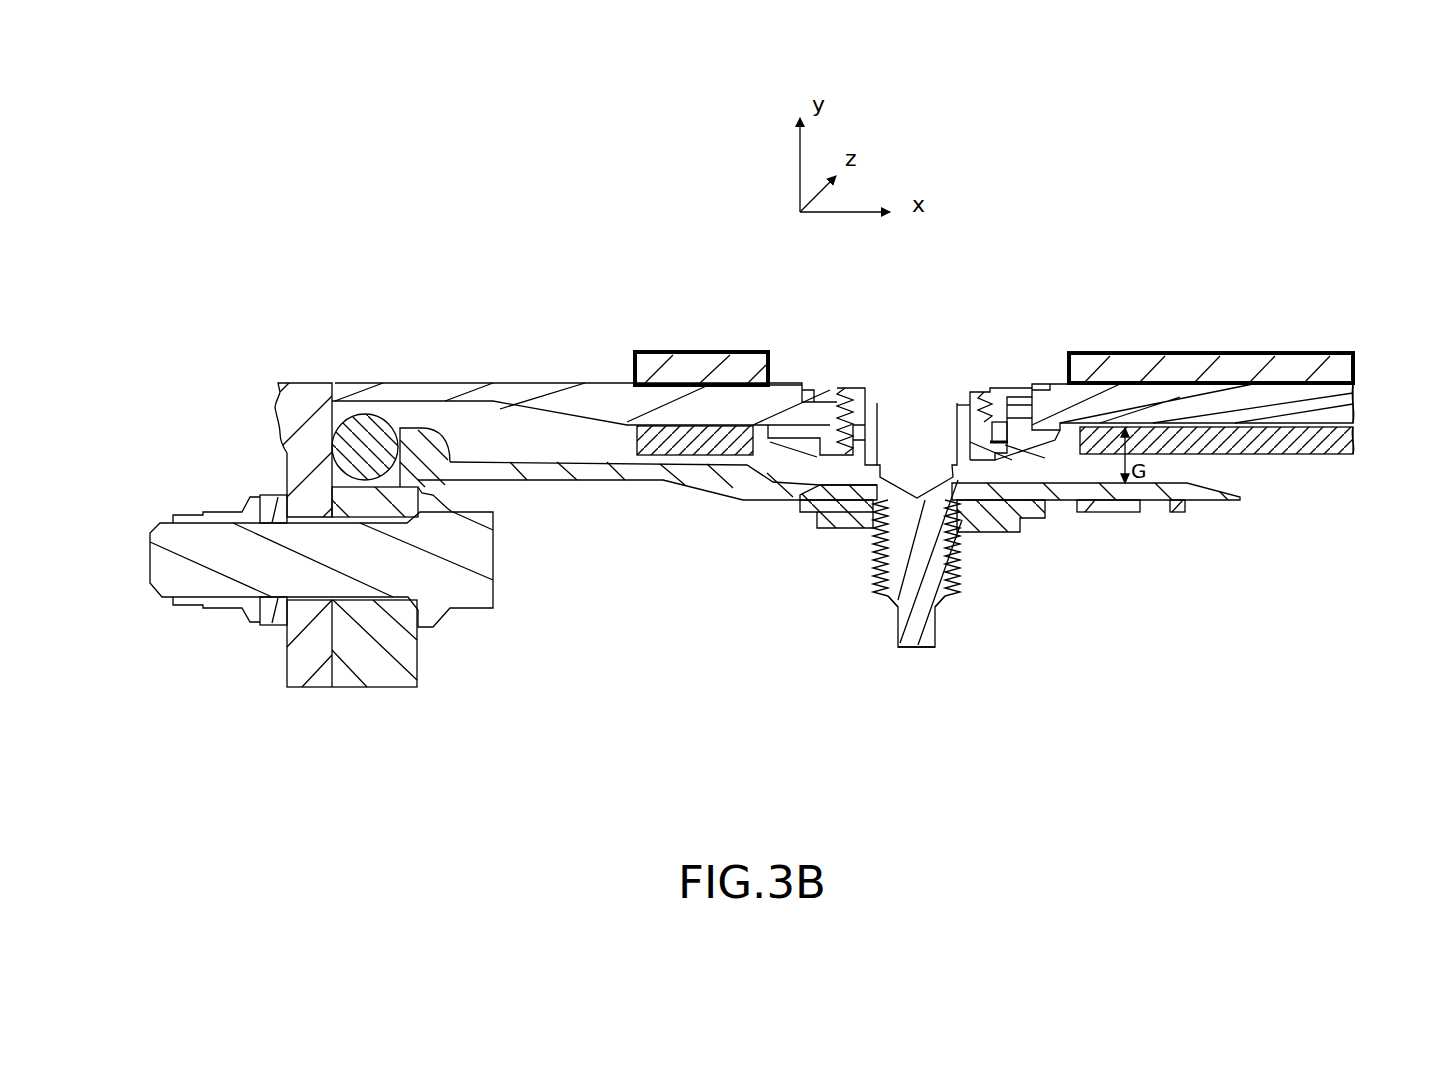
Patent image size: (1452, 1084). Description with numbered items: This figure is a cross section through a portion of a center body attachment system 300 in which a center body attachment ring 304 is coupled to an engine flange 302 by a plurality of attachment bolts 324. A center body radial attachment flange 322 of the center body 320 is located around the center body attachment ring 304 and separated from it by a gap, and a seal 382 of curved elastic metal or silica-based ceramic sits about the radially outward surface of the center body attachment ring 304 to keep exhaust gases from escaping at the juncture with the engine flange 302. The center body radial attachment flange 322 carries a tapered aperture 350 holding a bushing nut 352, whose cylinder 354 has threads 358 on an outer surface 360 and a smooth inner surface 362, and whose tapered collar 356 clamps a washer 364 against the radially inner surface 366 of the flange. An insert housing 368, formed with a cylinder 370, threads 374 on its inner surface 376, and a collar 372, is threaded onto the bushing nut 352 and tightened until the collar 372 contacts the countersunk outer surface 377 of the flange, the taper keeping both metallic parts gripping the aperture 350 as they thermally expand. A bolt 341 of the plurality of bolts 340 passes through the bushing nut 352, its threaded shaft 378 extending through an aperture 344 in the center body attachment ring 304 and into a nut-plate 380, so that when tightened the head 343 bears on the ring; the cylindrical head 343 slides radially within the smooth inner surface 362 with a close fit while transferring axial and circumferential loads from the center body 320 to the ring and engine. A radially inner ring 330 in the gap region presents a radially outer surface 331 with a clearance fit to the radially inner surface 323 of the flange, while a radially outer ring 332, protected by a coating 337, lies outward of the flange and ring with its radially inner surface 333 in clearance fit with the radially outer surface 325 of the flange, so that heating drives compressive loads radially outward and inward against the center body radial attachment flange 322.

The center body attachment system 300 is at (374, 174).
The engine flange 302 is at (278, 410).
The center body attachment ring 304 is at (605, 482).
The center body 320 is at (1318, 395).
The center body radial attachment flange 322 is at (1156, 402).
The radially inner surface 323 is at (1293, 437).
The attachment bolts 324 is at (472, 608).
The radially outer surface 325 is at (1267, 385).
The radially inner ring 330 is at (1323, 454).
The radially outer surface 331 is at (1343, 423).
The radially outer ring 332 is at (1347, 368).
The radially inner surface 333 is at (1287, 377).
The coating 337 is at (652, 352).
The bolts 340 is at (913, 650).
The bolt 341 is at (938, 632).
The head 343 is at (870, 496).
The aperture 344 is at (866, 404).
The aperture 350 is at (918, 352).
The bushing nut 352 is at (1042, 450).
The cylinder 354 is at (975, 392).
The collar 356 is at (1017, 445).
The threads 358 is at (1004, 412).
The outer surface 360 is at (1070, 383).
The smooth inner surface 362 is at (970, 390).
The washer 364 is at (1062, 462).
The radially inner surface 366 is at (1250, 430).
The insert housing 368 is at (795, 352).
The cylinder 370 is at (838, 390).
The collar 372 is at (765, 352).
The threads 374 is at (846, 386).
The inner surface 376 is at (870, 398).
The countersunk outer surface 377 is at (735, 372).
The threaded shaft 378 is at (882, 600).
The nut-plate 380 is at (962, 564).
The seal 382 is at (378, 412).